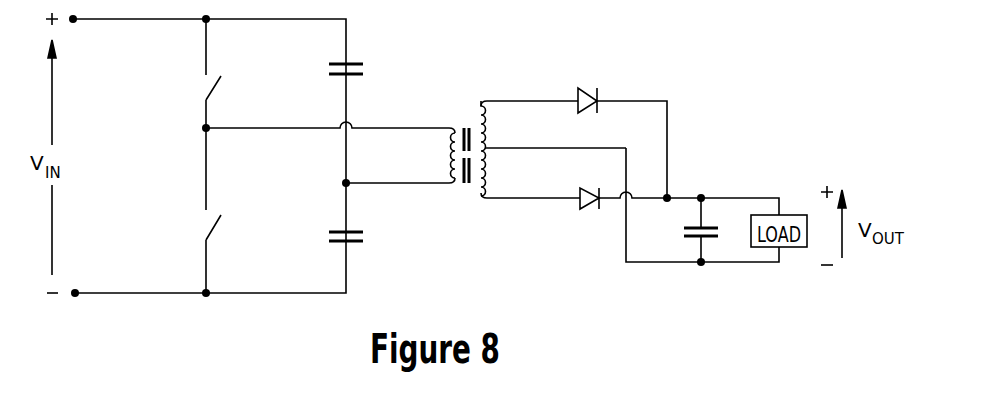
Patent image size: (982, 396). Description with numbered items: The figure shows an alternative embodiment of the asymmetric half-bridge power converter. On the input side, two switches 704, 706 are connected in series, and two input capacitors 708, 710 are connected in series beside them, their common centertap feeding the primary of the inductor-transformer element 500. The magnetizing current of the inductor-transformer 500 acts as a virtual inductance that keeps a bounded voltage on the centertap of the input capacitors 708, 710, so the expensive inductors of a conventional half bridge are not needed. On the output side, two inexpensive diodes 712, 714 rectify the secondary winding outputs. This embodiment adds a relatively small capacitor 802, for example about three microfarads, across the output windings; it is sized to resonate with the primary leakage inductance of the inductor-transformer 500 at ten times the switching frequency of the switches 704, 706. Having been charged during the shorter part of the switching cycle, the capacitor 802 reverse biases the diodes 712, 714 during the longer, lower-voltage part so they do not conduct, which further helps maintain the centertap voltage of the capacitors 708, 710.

The switch 704 is at (188, 73).
The switch 706 is at (188, 210).
The input capacitor 708 is at (370, 73).
The input capacitor 710 is at (370, 239).
The inductor-transformer element 500 is at (539, 126).
The diode 712 is at (589, 83).
The diode 714 is at (591, 216).
The small capacitor 802 is at (677, 230).